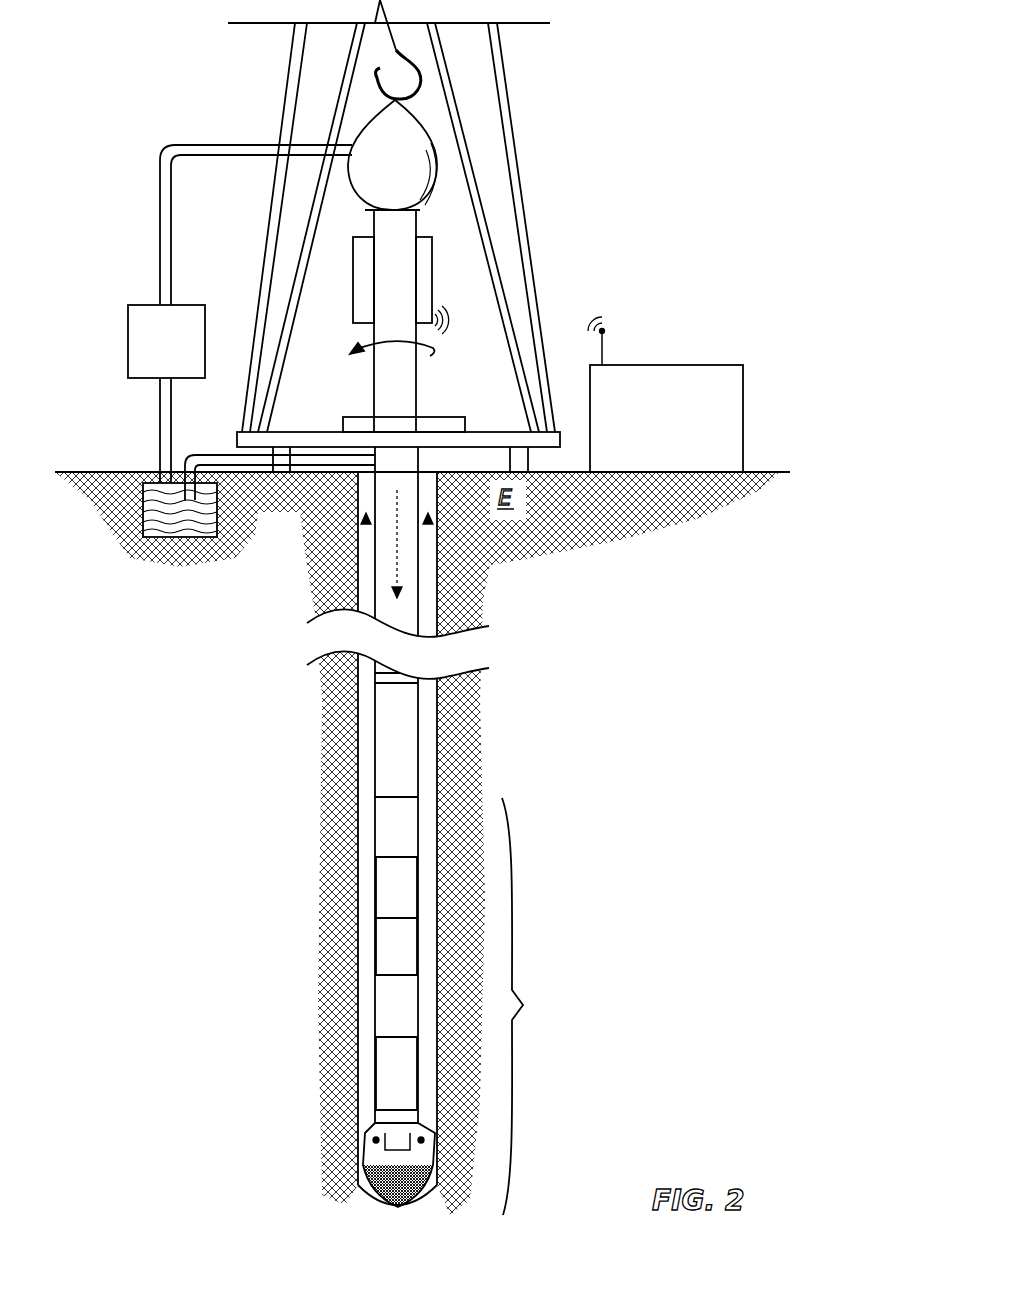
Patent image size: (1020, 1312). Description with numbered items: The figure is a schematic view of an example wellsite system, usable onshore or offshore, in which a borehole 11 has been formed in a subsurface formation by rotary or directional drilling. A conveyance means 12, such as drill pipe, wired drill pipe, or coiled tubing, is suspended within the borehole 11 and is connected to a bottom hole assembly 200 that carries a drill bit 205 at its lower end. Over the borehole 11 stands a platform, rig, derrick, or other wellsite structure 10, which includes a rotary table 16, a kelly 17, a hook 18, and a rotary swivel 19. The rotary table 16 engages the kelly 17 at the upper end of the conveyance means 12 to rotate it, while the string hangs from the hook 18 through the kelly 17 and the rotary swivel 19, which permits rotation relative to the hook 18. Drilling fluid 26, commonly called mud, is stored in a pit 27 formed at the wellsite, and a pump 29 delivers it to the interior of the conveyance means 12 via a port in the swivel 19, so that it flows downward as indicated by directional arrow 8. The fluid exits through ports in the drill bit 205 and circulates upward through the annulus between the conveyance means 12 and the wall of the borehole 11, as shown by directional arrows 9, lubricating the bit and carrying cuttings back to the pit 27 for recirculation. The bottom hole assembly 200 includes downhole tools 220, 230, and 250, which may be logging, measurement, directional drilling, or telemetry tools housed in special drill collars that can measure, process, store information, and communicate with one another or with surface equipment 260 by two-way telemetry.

The directional arrow 8 is at (392, 558).
The directional arrows 9 is at (368, 540).
The wellsite structure 10 is at (532, 116).
The borehole 11 is at (366, 474).
The conveyance means 12 is at (420, 497).
The rotary table 16 is at (447, 417).
The kelly 17 is at (375, 390).
The hook 18 is at (425, 76).
The rotary swivel 19 is at (358, 196).
The drilling fluid 26 is at (177, 530).
The pit 27 is at (152, 468).
The pump 29 is at (148, 380).
The bottom hole assembly 200 is at (542, 1006).
The drill bit 205 is at (360, 1158).
The downhole tool 220 is at (373, 890).
The downhole tool 230 is at (373, 948).
The downhole tool 250 is at (373, 1068).
The surface equipment 260 is at (667, 365).